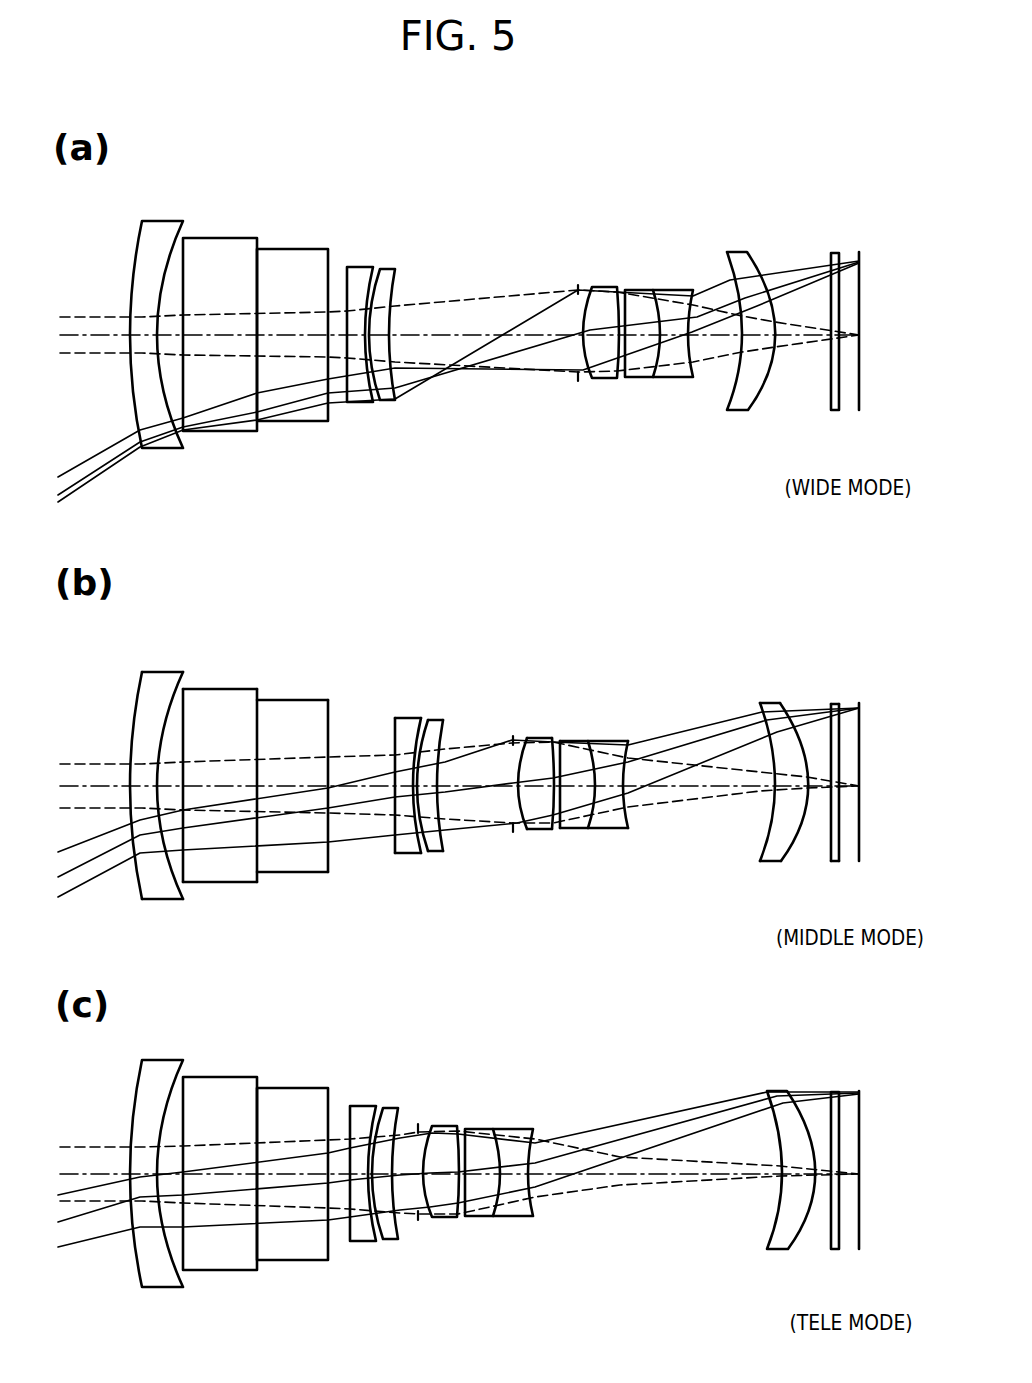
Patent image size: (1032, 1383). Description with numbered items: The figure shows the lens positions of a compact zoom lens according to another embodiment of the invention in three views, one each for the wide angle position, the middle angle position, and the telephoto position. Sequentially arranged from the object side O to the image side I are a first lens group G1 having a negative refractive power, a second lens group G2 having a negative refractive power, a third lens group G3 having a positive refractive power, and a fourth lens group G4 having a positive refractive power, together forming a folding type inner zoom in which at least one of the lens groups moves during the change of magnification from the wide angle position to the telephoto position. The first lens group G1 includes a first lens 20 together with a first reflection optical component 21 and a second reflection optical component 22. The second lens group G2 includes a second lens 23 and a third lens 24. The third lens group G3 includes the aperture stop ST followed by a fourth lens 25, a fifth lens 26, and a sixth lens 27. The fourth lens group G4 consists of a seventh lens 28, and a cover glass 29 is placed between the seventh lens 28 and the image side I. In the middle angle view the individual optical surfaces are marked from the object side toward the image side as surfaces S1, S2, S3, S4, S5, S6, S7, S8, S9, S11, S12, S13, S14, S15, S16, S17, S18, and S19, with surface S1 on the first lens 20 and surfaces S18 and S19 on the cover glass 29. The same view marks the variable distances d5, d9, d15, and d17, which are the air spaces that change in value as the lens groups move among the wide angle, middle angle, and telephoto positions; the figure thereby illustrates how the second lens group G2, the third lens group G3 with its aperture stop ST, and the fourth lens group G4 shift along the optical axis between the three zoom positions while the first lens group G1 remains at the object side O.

The first lens 20 is at (163, 448).
The first reflection optical component 21 is at (220, 431).
The second reflection optical component 22 is at (293, 421).
The second lens 23 is at (362, 402).
The third lens 24 is at (385, 400).
The fourth lens 25 is at (607, 378).
The fifth lens 26 is at (638, 377).
The sixth lens 27 is at (672, 377).
The seventh lens 28 is at (735, 410).
The cover glass 29 is at (835, 410).
The aperture stop ST is at (578, 381).
The first lens group G1 is at (327, 210).
The second lens group G2 is at (347, 210).
The third lens group G3 is at (578, 210).
The fourth lens group G4 is at (725, 210).
The object side O is at (38, 336).
The image side I is at (872, 331).
The lens surface 1 S1 is at (133, 716).
The lens surface 2 S2 is at (177, 712).
The lens surface 3 S3 is at (187, 740).
The lens surface 4 S4 is at (260, 730).
The lens surface 5 S5 is at (333, 722).
The lens surface 6 S6 is at (395, 735).
The lens surface 7 S7 is at (418, 740).
The lens surface 8 S8 is at (428, 738).
The lens surface 9 S9 is at (446, 737).
The lens surface 11 S11 is at (525, 740).
The lens surface 12 S12 is at (554, 741).
The lens surface 13 S13 is at (565, 812).
The lens surface 14 S14 is at (590, 755).
The lens surface 15 S15 is at (635, 748).
The lens surface 16 S16 is at (763, 733).
The lens surface 17 S17 is at (788, 722).
The lens surface 18 S18 is at (830, 732).
The lens surface 19 S19 is at (846, 733).
The variable distance d5 is at (365, 786).
The variable distance d9 is at (477, 786).
The variable distance d15 is at (698, 786).
The variable distance d17 is at (818, 786).